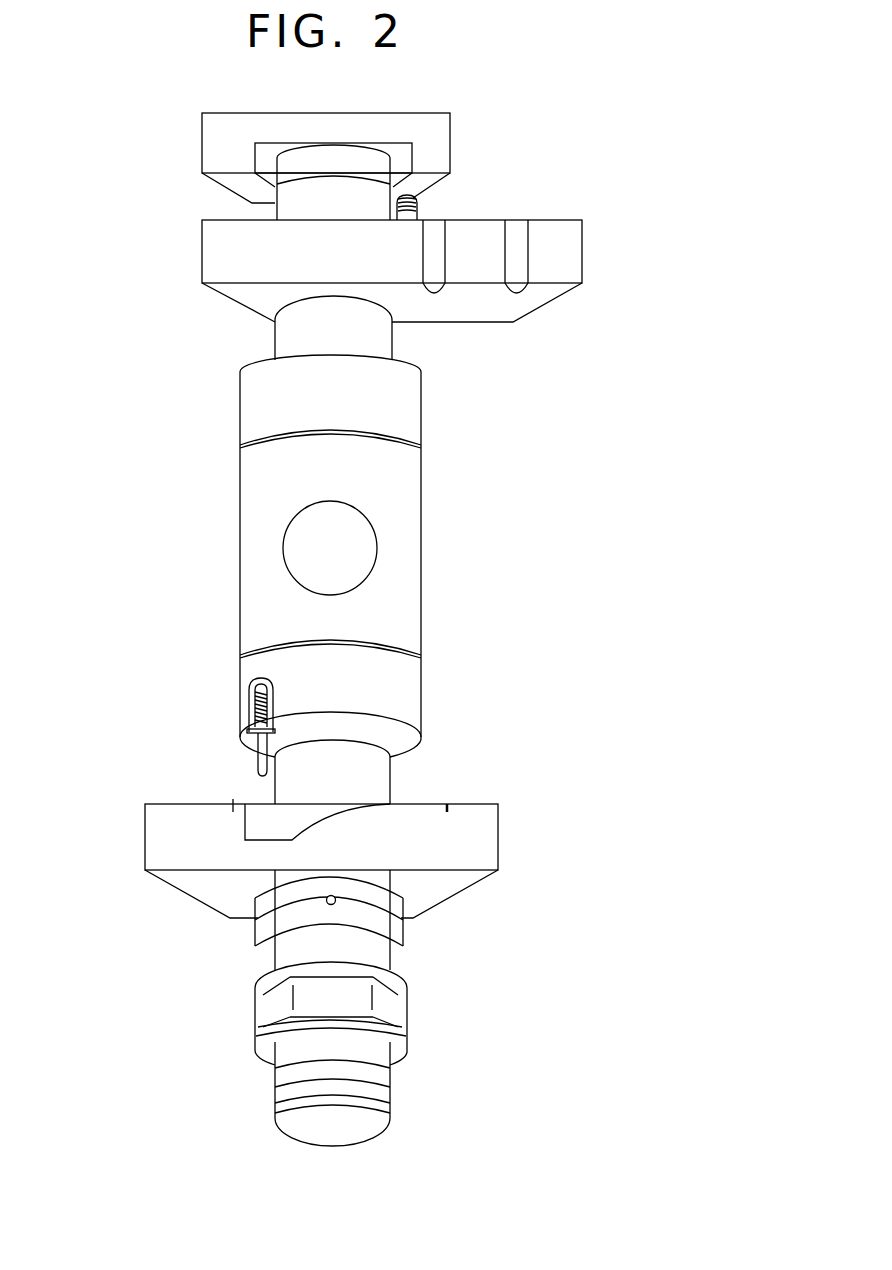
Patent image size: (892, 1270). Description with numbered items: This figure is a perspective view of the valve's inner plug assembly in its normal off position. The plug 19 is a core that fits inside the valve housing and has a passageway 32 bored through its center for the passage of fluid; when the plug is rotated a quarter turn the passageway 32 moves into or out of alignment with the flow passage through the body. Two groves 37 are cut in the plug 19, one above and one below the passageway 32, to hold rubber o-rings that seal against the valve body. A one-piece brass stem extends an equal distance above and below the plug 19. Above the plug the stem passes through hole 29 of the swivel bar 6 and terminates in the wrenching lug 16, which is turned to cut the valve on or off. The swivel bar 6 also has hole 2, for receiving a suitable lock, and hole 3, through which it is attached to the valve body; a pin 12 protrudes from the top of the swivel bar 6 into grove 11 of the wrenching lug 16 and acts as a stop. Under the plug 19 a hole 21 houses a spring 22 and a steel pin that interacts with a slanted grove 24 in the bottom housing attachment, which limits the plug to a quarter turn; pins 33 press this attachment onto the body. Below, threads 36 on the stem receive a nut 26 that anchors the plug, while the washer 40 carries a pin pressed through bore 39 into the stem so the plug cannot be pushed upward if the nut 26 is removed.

The hole 2 is at (426, 270).
The hole 3 is at (475, 295).
The swivel bar 6 is at (587, 260).
The grove 11 is at (245, 157).
The pin 12 is at (440, 208).
The wrenching lug 16 is at (460, 142).
The plug 19 is at (422, 480).
The hole 21 is at (228, 713).
The spring 22 is at (290, 690).
The slanted grove 24 is at (237, 823).
The nut 26 is at (432, 1006).
The hole 29 is at (257, 323).
The passageway 32 is at (373, 548).
The pins 33 is at (470, 810).
The threads 36 is at (253, 1092).
The groves 37 is at (441, 445).
The bore 39 is at (298, 902).
The washer 40 is at (425, 932).